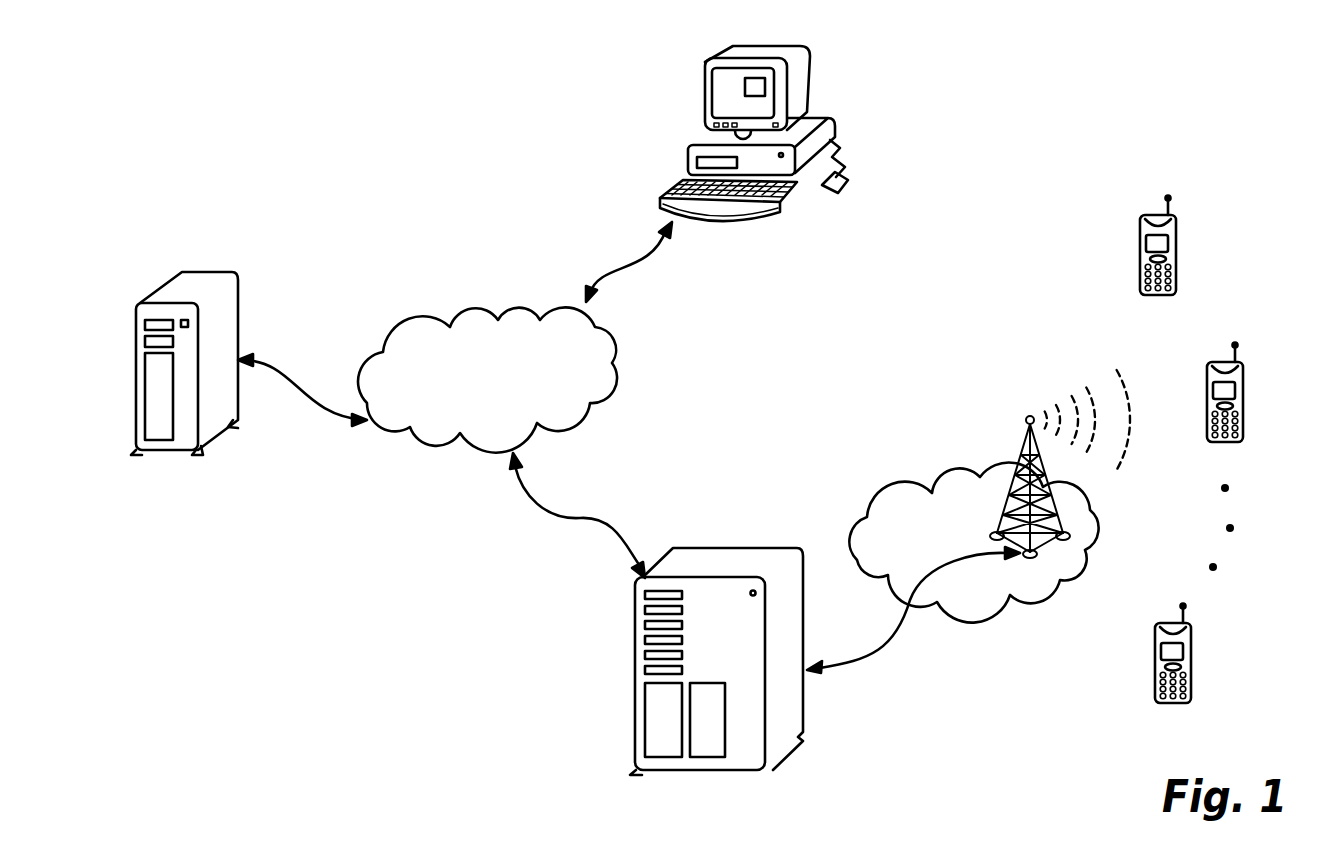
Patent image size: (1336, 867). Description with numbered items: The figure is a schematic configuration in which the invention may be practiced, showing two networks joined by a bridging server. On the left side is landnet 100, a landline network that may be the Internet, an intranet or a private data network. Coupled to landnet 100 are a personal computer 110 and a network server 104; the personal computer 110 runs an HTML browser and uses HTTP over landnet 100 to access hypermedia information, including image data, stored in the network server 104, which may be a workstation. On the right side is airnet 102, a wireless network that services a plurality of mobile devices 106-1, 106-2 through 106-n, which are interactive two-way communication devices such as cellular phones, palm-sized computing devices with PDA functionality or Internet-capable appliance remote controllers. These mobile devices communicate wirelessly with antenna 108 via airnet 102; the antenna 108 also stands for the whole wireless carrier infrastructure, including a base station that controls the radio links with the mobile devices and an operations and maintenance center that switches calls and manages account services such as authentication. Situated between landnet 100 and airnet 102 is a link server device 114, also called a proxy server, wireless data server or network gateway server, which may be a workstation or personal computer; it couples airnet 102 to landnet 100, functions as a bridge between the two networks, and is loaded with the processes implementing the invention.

The landnet 100 is at (623, 367).
The airnet 102 is at (913, 493).
The network server 104 is at (228, 303).
The mobile device 106-1 is at (1172, 201).
The mobile device 106-2 is at (1238, 350).
The mobile device 106-n is at (1187, 607).
The antenna 108 is at (1026, 421).
The personal computer 110 is at (818, 118).
The link server device 114 is at (713, 552).